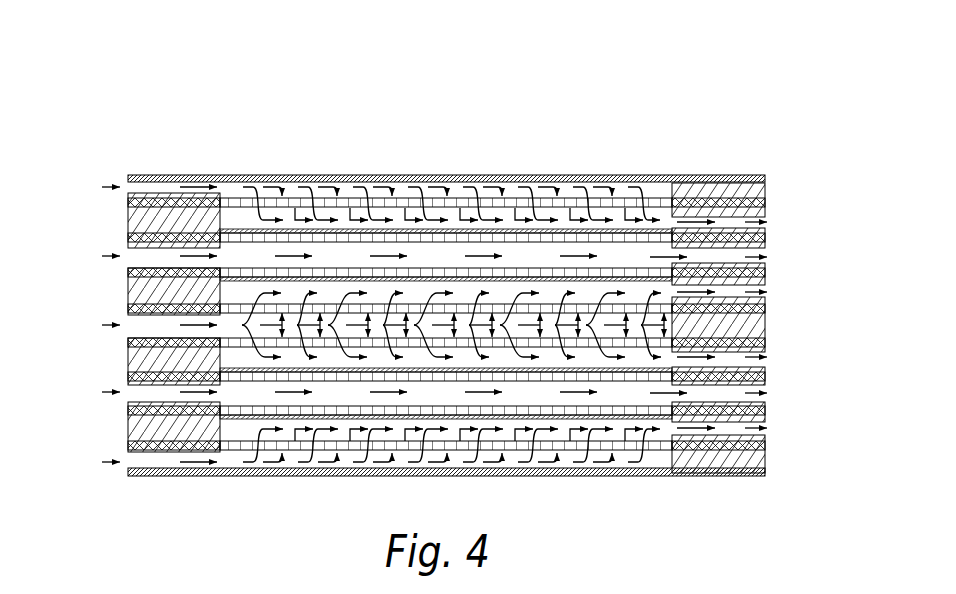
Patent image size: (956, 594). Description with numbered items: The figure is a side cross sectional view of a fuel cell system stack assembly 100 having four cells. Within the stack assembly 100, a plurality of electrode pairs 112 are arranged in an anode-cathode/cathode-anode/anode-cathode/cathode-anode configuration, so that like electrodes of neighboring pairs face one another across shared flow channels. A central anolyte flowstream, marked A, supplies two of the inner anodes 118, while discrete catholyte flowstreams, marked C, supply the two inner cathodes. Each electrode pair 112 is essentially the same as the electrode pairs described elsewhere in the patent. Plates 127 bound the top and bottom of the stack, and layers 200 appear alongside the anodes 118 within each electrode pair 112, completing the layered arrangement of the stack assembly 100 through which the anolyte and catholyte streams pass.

The fuel cell system stack assembly 100 is at (340, 82).
The electrode pair 112 is at (447, 328).
The inner anode 118 is at (765, 207).
The end plate 127 is at (633, 176).
The cathode electrode 200 is at (765, 241).